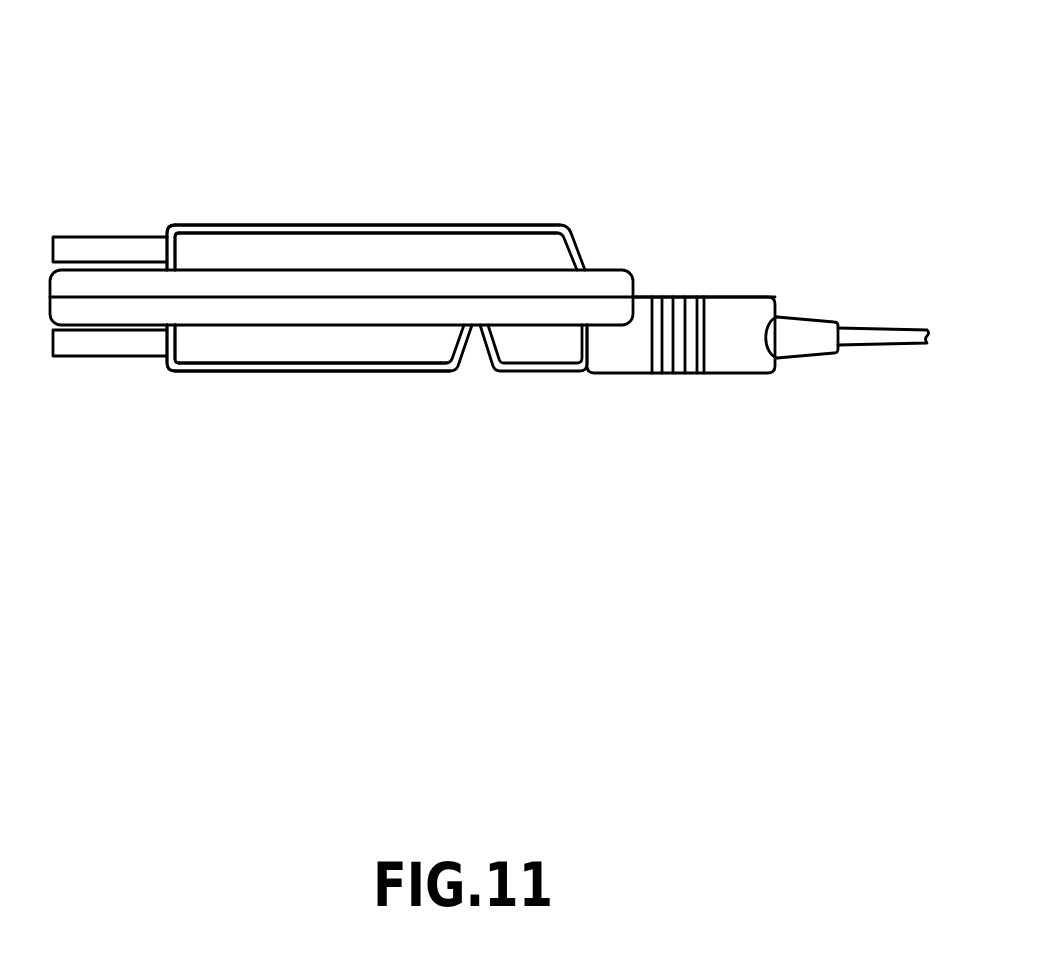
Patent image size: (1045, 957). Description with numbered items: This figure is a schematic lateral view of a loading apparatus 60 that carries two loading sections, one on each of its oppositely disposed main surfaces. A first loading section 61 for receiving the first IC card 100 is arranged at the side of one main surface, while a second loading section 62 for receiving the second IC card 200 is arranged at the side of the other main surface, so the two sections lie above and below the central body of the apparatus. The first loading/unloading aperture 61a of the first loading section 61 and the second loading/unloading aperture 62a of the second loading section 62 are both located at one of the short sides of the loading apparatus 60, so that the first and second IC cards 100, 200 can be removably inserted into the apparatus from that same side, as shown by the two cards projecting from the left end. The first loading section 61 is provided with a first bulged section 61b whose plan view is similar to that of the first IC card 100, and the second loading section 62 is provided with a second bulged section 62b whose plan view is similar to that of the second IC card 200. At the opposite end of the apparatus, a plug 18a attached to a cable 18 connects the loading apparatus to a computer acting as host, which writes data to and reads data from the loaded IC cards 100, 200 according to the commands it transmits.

The loading apparatus 60 is at (668, 108).
The first loading section 61 is at (533, 206).
The first loading/unloading aperture 61a is at (165, 235).
The first bulged section 61b is at (375, 224).
The second loading section 62 is at (419, 380).
The second loading/unloading aperture 62a is at (163, 371).
The second bulged section 62b is at (270, 371).
The cable 18 is at (873, 333).
The plug 18a is at (730, 308).
The first IC card 100 is at (70, 242).
The second IC card 200 is at (68, 347).